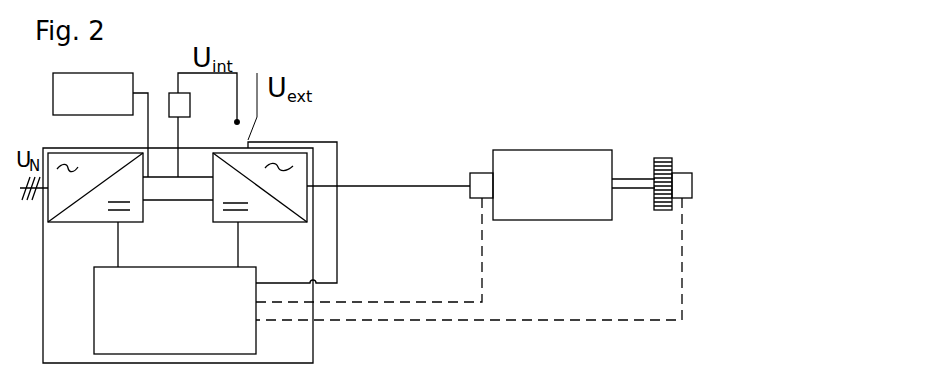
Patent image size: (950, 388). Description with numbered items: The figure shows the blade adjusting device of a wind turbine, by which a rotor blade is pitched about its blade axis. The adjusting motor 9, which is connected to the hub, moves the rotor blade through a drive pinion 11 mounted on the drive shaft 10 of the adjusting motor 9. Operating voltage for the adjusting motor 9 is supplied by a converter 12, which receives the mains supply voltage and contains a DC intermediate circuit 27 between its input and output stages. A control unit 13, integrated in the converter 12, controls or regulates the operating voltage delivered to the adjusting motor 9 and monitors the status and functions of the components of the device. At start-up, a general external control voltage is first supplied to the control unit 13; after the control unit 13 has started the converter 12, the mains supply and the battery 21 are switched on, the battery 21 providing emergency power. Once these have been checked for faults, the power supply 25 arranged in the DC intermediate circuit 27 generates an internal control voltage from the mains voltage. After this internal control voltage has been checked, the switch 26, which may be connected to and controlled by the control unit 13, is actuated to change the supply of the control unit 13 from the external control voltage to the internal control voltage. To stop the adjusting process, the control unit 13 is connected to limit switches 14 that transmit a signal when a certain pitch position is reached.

The adjusting motor 9 is at (552, 185).
The drive shaft 10 is at (627, 178).
The drive pinion 11 is at (660, 204).
The converter 12 is at (315, 348).
The control unit 13 is at (175, 288).
The limit switches 14 is at (477, 180).
The battery 21 is at (100, 125).
The power supply 25 is at (175, 102).
The switch 26 is at (248, 141).
The DC intermediate circuit 27 is at (171, 216).